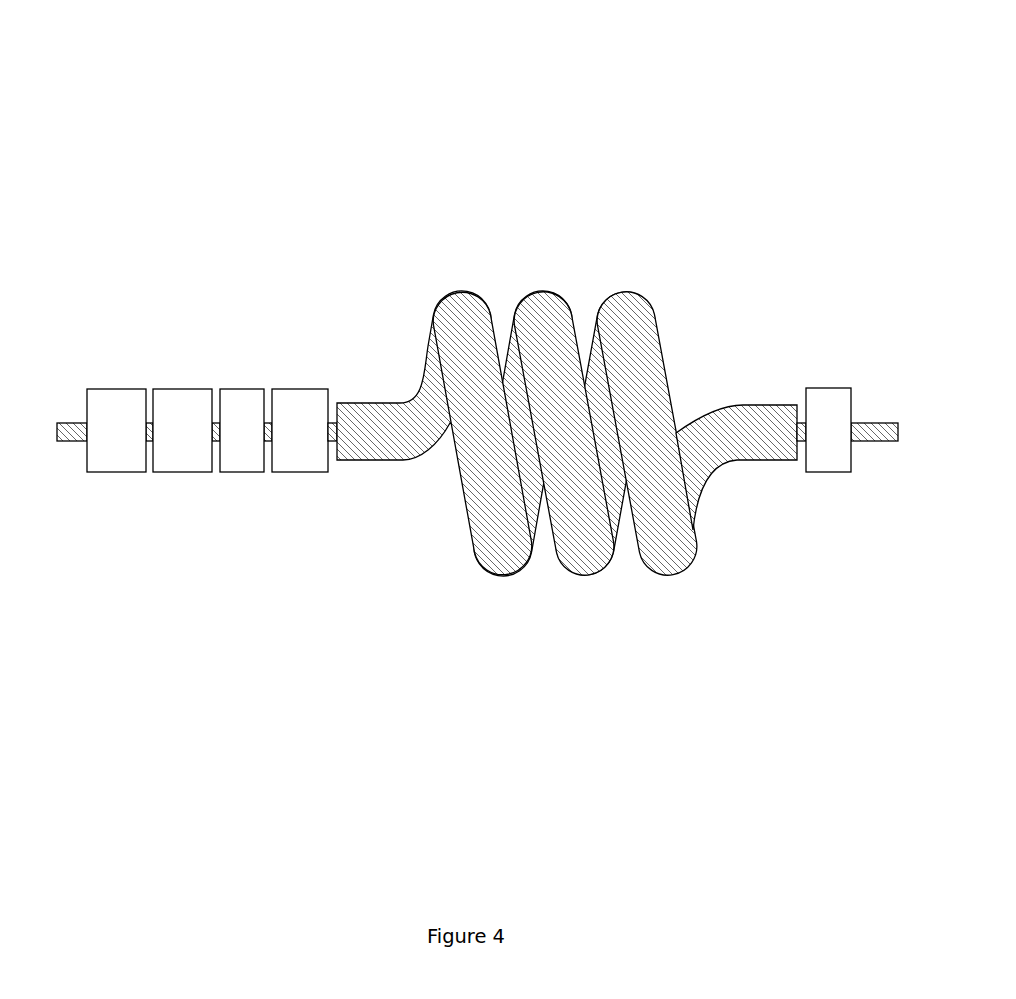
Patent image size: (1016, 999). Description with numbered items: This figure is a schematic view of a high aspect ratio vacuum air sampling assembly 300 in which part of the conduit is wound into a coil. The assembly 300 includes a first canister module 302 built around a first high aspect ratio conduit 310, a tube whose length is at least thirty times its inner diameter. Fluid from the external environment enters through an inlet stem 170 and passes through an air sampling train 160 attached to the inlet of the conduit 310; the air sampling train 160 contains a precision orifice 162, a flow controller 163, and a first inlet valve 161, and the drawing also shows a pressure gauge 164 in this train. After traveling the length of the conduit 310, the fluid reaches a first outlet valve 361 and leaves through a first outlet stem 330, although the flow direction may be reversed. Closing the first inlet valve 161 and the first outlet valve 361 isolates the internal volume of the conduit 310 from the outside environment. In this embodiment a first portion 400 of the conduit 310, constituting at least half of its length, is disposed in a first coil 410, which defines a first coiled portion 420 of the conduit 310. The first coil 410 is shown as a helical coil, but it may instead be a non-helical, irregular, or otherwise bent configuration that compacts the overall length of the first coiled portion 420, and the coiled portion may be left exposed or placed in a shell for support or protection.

The high aspect ratio vacuum air sampling assembly 300 is at (156, 64).
The first canister module 302 is at (161, 111).
The air sampling train 160 is at (328, 488).
The first inlet valve 161 is at (227, 389).
The precision orifice 162 is at (122, 389).
The flow controller 163 is at (167, 389).
The pressure gauge 164 is at (283, 389).
The inlet stem 170 is at (57, 433).
The first high aspect ratio conduit 310 is at (473, 460).
The first outlet stem 330 is at (872, 422).
The first outlet valve 361 is at (841, 388).
The first portion 400 is at (723, 292).
The first coiled portion 420 is at (591, 509).
The first coil 410 is at (500, 575).